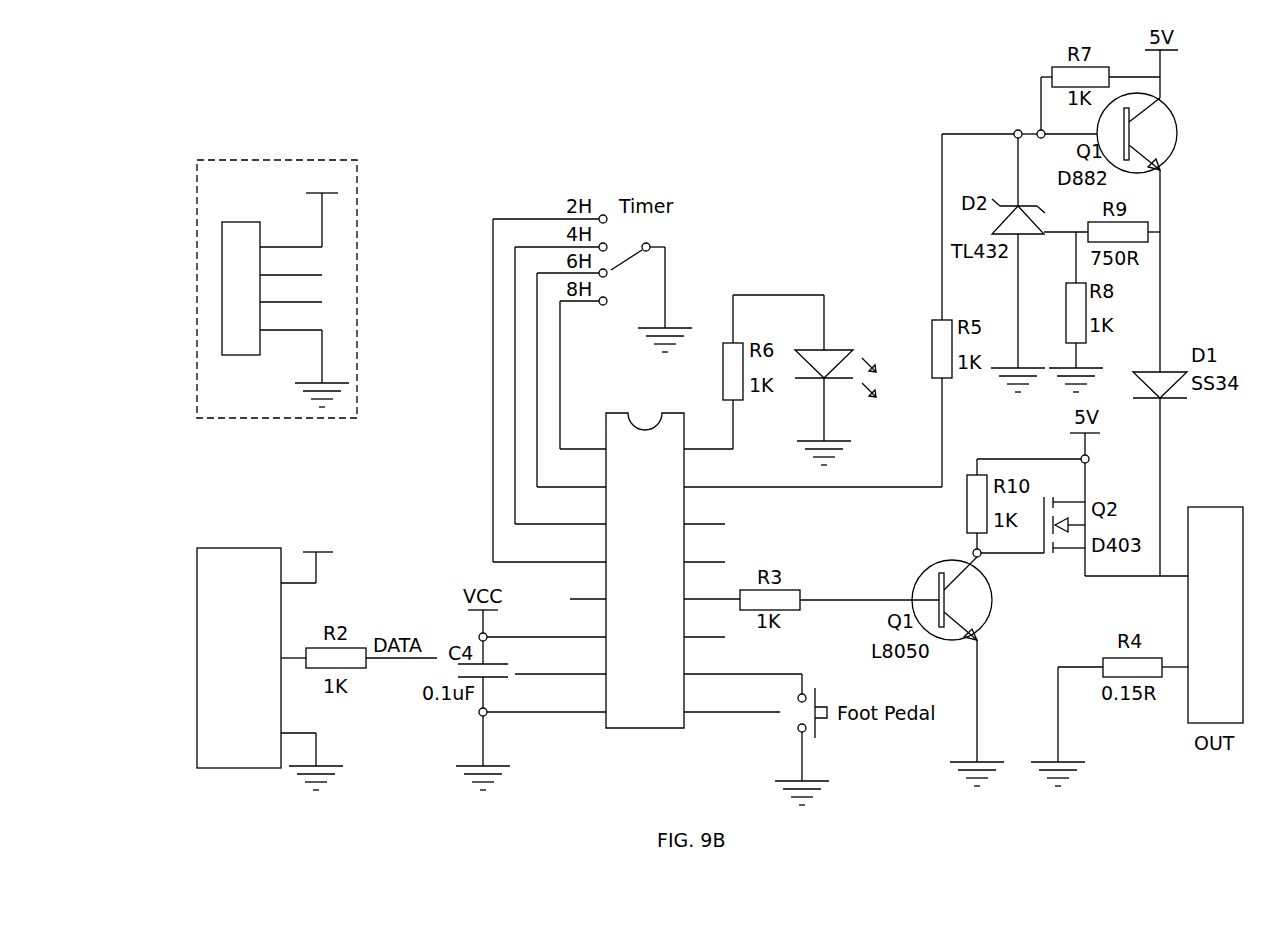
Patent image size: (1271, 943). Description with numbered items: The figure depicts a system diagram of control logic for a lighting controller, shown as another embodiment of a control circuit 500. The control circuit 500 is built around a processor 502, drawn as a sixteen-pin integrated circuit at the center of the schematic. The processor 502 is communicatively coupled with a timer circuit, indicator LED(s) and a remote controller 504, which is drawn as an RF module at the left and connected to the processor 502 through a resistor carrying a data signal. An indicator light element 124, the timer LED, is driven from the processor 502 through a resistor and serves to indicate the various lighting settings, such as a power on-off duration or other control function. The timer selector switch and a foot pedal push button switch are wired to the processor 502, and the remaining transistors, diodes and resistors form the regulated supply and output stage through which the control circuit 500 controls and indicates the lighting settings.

The control circuit 500 is at (335, 91).
The indicator light element 124 is at (879, 326).
The processor 502 is at (665, 588).
The remote controller 504 is at (254, 673).